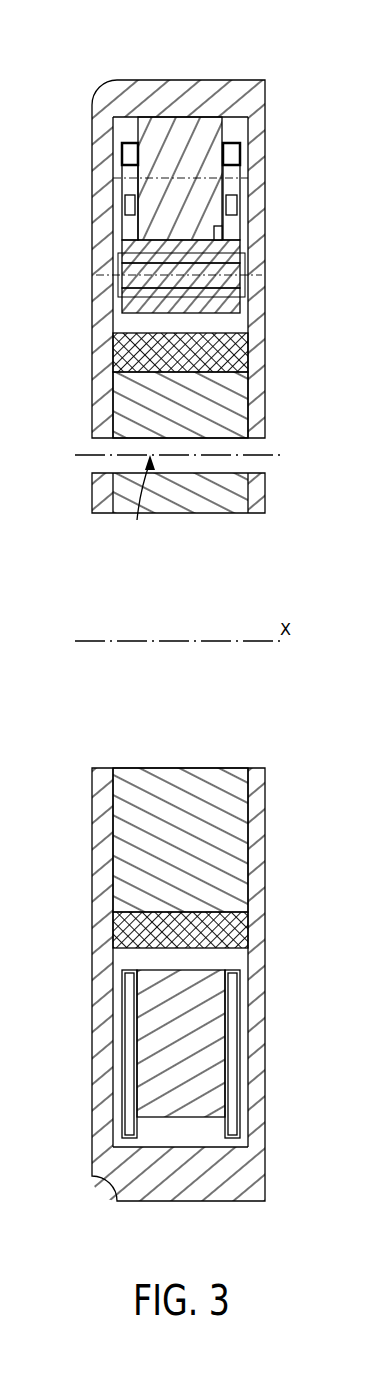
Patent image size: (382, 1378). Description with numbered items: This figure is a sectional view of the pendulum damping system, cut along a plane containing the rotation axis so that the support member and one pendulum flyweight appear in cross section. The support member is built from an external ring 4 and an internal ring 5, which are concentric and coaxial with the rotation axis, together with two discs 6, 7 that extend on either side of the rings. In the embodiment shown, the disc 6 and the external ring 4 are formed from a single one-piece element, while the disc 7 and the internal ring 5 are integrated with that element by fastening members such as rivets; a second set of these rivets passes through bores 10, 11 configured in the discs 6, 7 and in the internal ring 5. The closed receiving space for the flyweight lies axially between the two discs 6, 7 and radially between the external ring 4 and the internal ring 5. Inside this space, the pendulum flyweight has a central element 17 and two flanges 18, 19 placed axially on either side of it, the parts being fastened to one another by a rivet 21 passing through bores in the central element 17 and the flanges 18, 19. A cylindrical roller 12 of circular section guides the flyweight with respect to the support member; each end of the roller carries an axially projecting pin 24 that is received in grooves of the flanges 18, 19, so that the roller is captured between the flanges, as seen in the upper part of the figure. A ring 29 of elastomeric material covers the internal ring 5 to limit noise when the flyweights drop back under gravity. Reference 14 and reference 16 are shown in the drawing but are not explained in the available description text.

The external ring 4 is at (190, 100).
The internal ring 5 is at (225, 410).
The disc 6 is at (105, 345).
The disc 7 is at (255, 318).
The bore 10 is at (263, 463).
The bore 11 is at (137, 516).
The cylindrical roller 12 is at (212, 118).
The recess 14 is at (205, 228).
The end wall 16 is at (167, 118).
The central element 17 is at (128, 256).
The flange 18 is at (233, 230).
The flange 19 is at (130, 222).
The rivet 21 is at (118, 288).
The pin 24 is at (125, 172).
The ring made of elastomeric material 29 is at (225, 352).